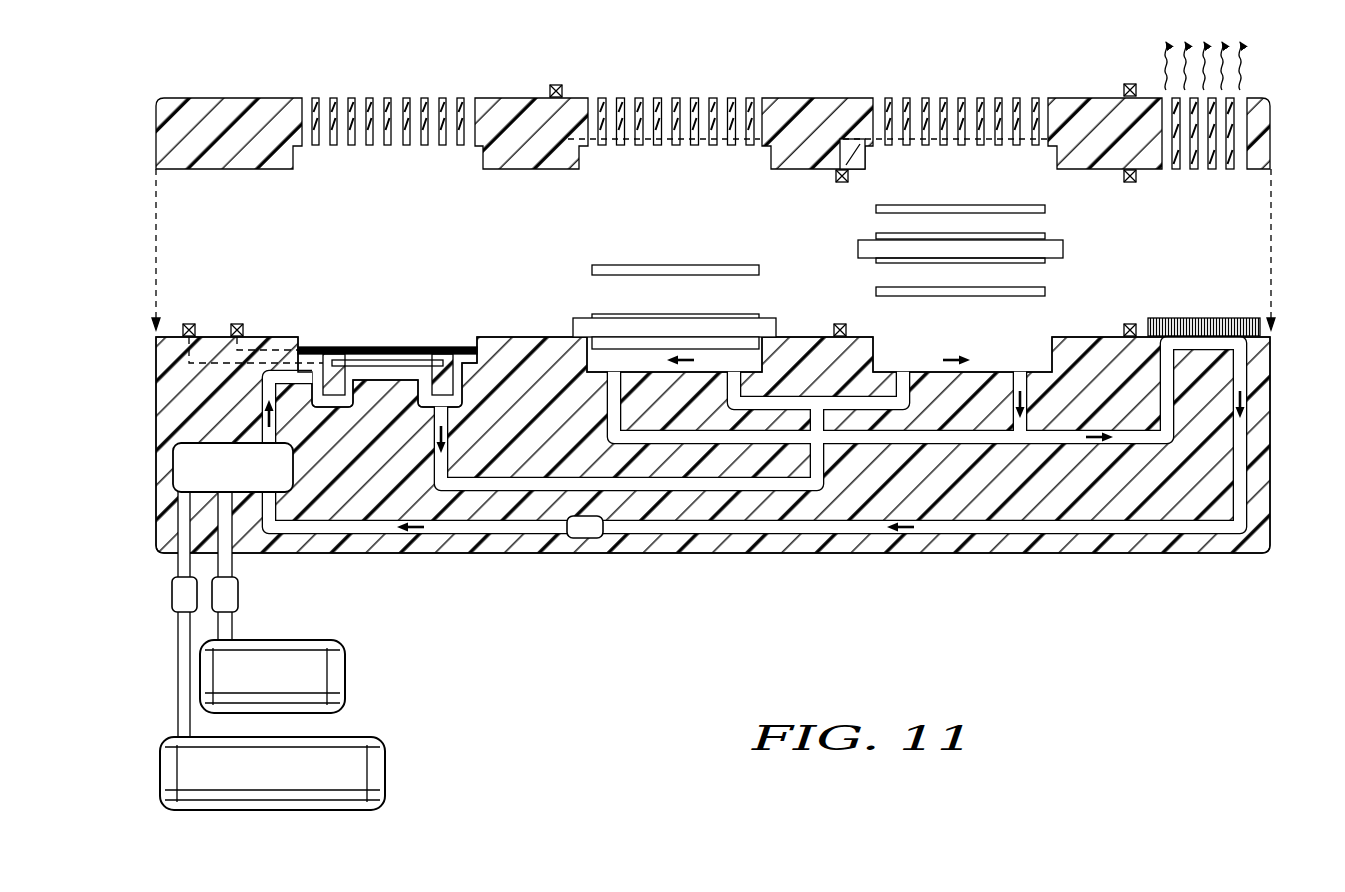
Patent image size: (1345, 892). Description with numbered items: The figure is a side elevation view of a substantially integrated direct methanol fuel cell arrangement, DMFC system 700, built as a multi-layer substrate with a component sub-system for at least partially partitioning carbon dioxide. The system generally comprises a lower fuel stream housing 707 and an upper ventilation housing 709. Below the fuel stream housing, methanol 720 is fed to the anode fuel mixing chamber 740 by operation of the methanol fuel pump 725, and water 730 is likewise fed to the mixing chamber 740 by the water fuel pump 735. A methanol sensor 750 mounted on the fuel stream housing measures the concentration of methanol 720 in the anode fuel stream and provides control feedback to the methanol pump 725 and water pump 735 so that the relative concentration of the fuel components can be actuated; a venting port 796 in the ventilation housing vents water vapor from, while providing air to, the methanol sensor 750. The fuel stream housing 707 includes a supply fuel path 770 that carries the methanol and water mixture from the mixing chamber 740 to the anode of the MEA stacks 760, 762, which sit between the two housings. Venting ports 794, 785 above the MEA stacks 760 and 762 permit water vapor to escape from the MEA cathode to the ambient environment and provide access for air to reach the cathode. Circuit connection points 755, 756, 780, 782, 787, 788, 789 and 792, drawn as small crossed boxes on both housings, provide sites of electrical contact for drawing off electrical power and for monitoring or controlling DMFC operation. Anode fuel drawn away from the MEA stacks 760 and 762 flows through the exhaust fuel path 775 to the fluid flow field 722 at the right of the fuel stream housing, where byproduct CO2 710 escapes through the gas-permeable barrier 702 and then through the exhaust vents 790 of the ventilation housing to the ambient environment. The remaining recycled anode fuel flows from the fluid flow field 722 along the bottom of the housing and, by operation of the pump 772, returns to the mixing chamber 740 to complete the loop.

The DMFC system 700 is at (725, 426).
The gas-permeable barrier 702 is at (1208, 317).
The fuel stream housing 707 is at (1272, 510).
The ventilation housing 709 is at (1273, 118).
The byproduct CO2 710 is at (1244, 64).
The methanol 720 is at (347, 682).
The fluid flow field 722 is at (1211, 348).
The methanol fuel pump 725 is at (239, 597).
The water 730 is at (387, 777).
The water fuel pump 735 is at (172, 597).
The anode fuel mixing chamber 740 is at (217, 479).
The methanol sensor 750 is at (368, 326).
The circuit connection point 755 is at (238, 323).
The circuit connection point 756 is at (190, 323).
The MEA stack 760 is at (566, 272).
The MEA stack 762 is at (1066, 198).
The supply fuel path 770 is at (824, 472).
The pump 772 is at (579, 539).
The exhaust fuel path 775 is at (968, 443).
The circuit connection point 780 is at (841, 323).
The circuit connection point 782 is at (842, 182).
The venting port 785 is at (957, 157).
The circuit connection point 787 is at (1130, 182).
The circuit connection point 788 is at (1129, 323).
The circuit connection point 789 is at (1130, 83).
The exhaust vents 790 is at (1208, 182).
The circuit connection point 792 is at (557, 84).
The venting port 794 is at (647, 157).
The venting port 796 is at (360, 157).